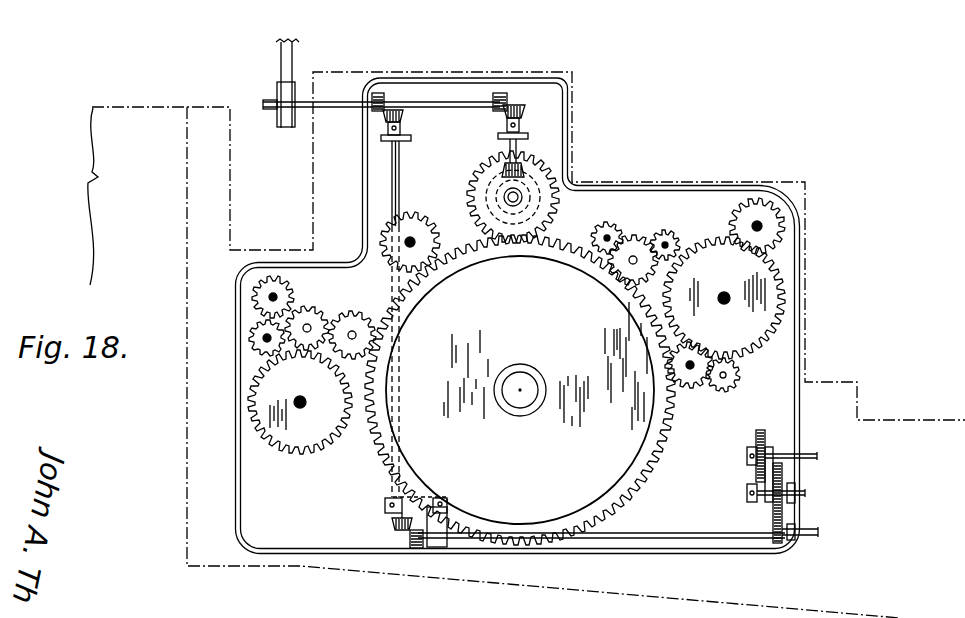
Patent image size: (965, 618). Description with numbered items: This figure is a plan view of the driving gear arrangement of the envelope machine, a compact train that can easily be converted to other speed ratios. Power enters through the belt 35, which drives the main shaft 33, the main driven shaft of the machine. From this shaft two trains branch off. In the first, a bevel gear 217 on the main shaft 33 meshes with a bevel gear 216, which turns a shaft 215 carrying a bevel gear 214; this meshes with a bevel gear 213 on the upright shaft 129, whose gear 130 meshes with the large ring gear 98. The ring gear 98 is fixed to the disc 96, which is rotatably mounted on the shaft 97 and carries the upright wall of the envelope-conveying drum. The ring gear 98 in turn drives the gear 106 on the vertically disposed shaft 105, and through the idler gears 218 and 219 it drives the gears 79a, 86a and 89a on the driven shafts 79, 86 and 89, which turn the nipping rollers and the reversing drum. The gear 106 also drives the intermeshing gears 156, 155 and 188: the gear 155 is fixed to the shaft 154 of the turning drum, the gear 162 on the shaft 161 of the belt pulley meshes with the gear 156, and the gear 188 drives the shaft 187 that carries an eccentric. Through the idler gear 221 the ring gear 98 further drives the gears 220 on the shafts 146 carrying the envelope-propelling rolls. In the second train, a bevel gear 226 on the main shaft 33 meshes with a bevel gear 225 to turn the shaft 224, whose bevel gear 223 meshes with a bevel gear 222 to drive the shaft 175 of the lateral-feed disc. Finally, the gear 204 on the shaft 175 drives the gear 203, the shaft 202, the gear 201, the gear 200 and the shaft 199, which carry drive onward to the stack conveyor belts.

The belt 35 is at (279, 56).
The shaft 33 is at (328, 108).
The bevel gear 226 is at (382, 96).
The bevel gear 225 is at (402, 120).
The shaft 224 is at (401, 160).
The bevel gear 217 is at (503, 93).
The bevel gear 216 is at (523, 110).
The shaft 215 is at (518, 151).
The bevel gear 214 is at (527, 170).
The bevel gear 213 is at (545, 178).
The gear 130 is at (470, 192).
The shaft 129 is at (520, 202).
The gear 106 is at (383, 238).
The shaft 105 is at (434, 216).
The driven shaft 79 is at (268, 297).
The gear 79a is at (258, 306).
The idler gear 218 is at (318, 316).
The idler gear 219 is at (356, 322).
The driven shaft 86 is at (262, 338).
The gear 86a is at (255, 344).
The driven shaft 89 is at (294, 404).
The gear 89a is at (266, 416).
The ring gear 98 is at (378, 440).
The disc 96 is at (430, 455).
The shaft 97 is at (520, 385).
The gear 220 is at (614, 233).
The idler gear 221 is at (615, 268).
The shaft 146 is at (665, 240).
The gear 188 is at (785, 231).
The shaft 187 is at (764, 223).
The gear 155 is at (781, 300).
The shaft 154 is at (732, 300).
The gear 156 is at (695, 380).
The gear 162 is at (737, 378).
The shaft 161 is at (719, 362).
The shaft 175 is at (636, 534).
The gear 200 is at (756, 441).
The gear 201 is at (771, 496).
The shaft 202 is at (747, 491).
The shaft 199 is at (800, 455).
The gear 203 is at (788, 478).
The gear 204 is at (790, 541).
The bevel gear 223 is at (395, 527).
The bevel gear 222 is at (417, 548).